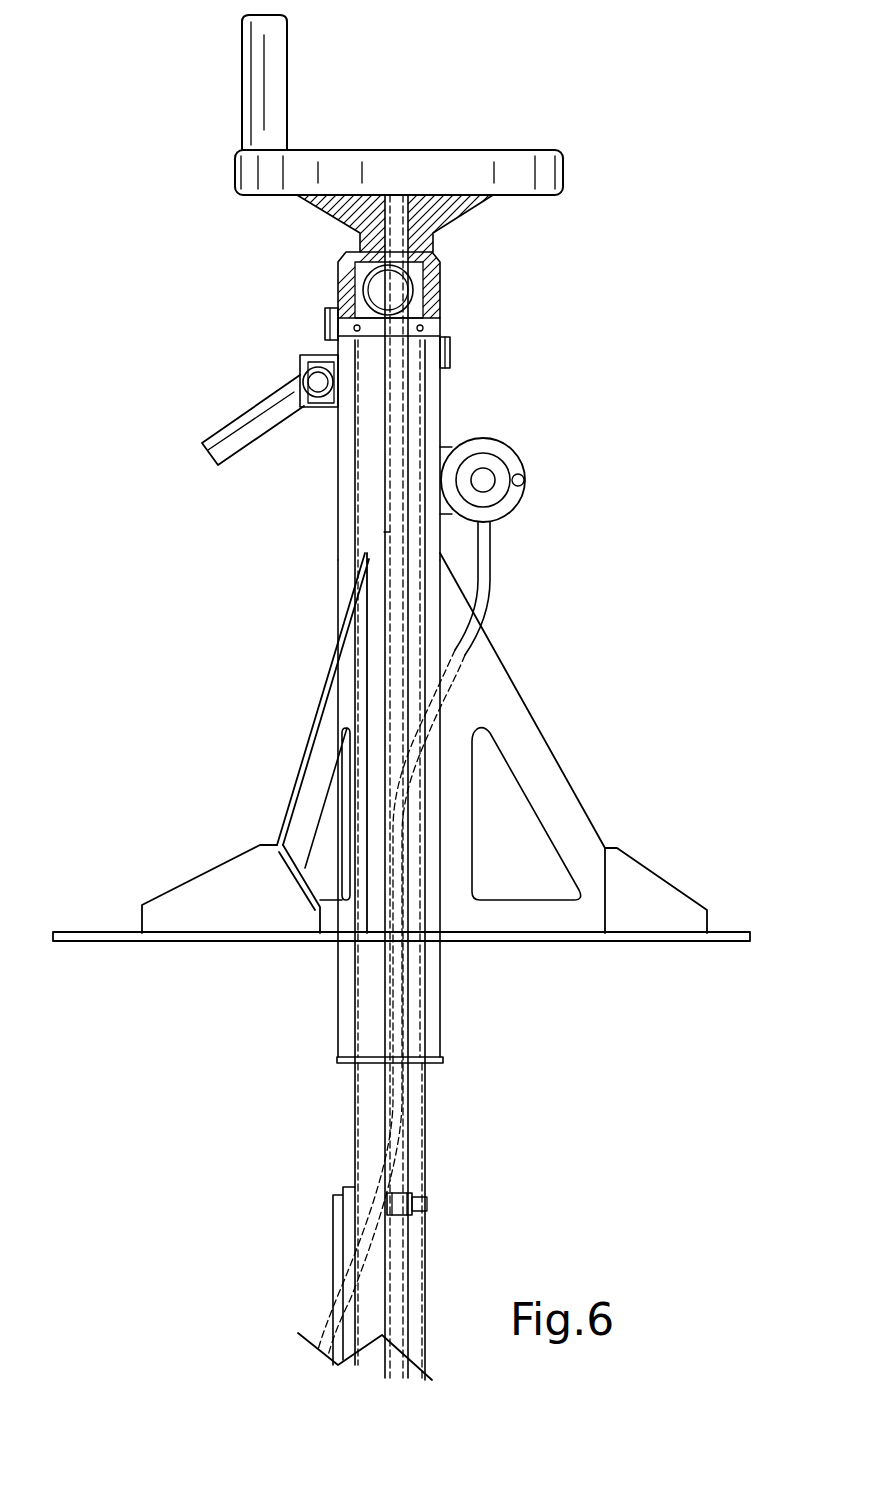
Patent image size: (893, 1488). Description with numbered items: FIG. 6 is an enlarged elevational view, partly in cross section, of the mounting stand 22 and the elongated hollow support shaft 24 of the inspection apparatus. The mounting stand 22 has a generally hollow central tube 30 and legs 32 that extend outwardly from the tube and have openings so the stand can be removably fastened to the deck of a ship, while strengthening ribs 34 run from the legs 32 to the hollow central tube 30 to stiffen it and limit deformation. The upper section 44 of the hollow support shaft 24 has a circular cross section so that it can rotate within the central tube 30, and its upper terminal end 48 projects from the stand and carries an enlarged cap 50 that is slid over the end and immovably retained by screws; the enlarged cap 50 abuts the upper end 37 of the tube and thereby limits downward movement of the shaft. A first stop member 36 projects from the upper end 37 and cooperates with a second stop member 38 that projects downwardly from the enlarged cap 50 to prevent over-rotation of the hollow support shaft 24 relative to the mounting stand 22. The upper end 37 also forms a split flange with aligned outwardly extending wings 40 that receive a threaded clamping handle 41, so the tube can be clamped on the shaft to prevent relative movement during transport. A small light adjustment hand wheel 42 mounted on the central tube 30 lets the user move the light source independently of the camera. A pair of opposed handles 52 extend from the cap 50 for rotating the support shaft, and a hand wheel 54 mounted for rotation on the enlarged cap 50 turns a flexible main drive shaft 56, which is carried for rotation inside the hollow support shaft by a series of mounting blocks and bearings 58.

The mounting stand 22 is at (178, 623).
The hollow support shaft 24 is at (425, 553).
The hollow central tube 30 is at (443, 1010).
The legs 32 is at (697, 942).
The strengthening ribs 34 is at (555, 750).
The first stop member 36 is at (452, 352).
The upper end 37 is at (442, 388).
The second stop member 38 is at (325, 322).
The wings 40 is at (300, 357).
The threaded clamping handle 41 is at (235, 452).
The light adjustment hand wheel 42 is at (535, 453).
The upper section 44 is at (355, 1112).
The upper terminal end 48 is at (424, 438).
The enlarged cap 50 is at (442, 290).
The opposed handles 52 is at (370, 286).
The hand wheel 54 is at (432, 150).
The flexible main drive shaft 56 is at (386, 532).
The mounting blocks and bearings 58 is at (428, 1187).